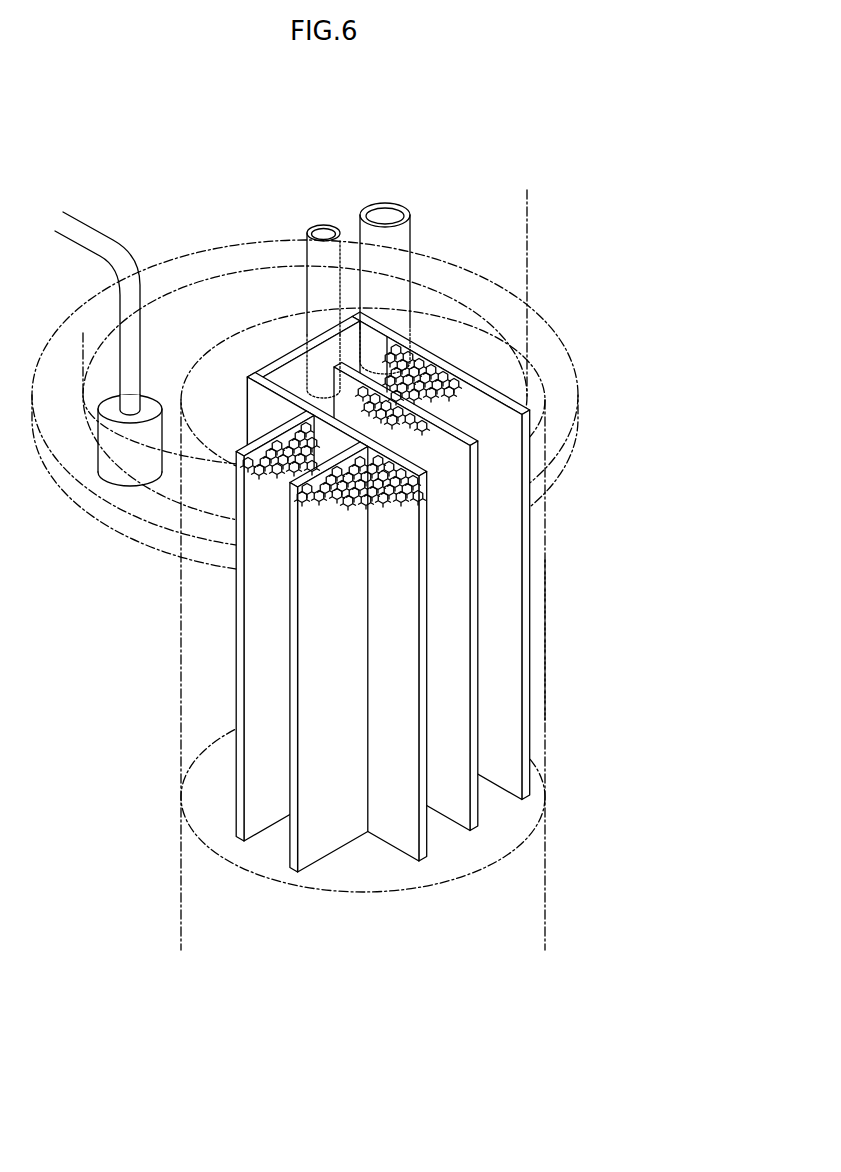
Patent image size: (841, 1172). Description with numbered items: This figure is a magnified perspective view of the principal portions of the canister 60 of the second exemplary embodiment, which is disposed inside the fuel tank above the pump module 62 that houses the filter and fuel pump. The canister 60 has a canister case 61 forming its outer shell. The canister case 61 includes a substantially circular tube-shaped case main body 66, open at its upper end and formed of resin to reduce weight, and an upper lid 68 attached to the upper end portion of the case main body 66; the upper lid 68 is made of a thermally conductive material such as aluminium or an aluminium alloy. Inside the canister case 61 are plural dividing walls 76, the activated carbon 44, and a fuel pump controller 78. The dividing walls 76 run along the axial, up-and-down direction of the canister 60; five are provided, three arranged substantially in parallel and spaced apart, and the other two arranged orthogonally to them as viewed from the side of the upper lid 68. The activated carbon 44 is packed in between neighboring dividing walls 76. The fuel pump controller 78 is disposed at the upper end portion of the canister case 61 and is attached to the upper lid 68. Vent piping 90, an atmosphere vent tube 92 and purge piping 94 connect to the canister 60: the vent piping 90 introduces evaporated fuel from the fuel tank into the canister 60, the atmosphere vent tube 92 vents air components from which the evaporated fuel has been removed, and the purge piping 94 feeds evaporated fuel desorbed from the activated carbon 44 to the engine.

The canister 60 is at (550, 197).
The canister case 61 is at (575, 648).
The pump module 62 is at (548, 880).
The case main body 66 is at (553, 565).
The upper lid 68 is at (552, 323).
The dividing walls 76 is at (503, 712).
The fuel pump controller 78 is at (281, 344).
The activated carbon 44 is at (438, 356).
The vent piping 90 is at (398, 205).
The atmosphere vent tube 92 is at (92, 218).
The purge piping 94 is at (324, 225).